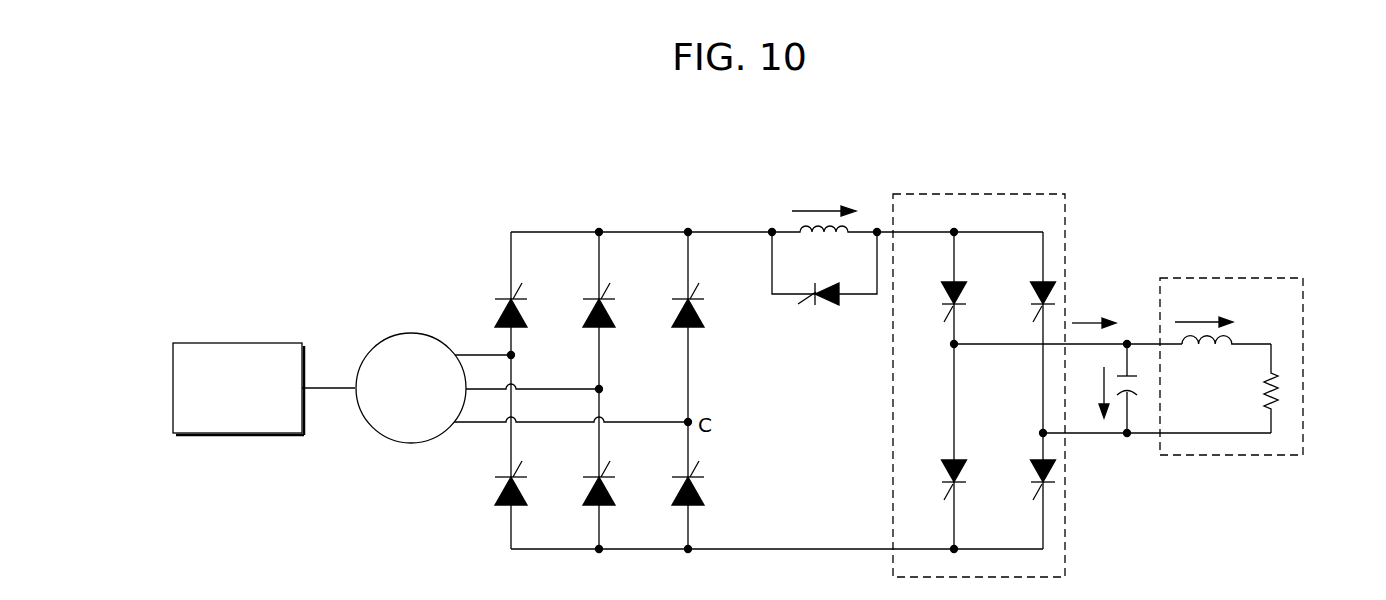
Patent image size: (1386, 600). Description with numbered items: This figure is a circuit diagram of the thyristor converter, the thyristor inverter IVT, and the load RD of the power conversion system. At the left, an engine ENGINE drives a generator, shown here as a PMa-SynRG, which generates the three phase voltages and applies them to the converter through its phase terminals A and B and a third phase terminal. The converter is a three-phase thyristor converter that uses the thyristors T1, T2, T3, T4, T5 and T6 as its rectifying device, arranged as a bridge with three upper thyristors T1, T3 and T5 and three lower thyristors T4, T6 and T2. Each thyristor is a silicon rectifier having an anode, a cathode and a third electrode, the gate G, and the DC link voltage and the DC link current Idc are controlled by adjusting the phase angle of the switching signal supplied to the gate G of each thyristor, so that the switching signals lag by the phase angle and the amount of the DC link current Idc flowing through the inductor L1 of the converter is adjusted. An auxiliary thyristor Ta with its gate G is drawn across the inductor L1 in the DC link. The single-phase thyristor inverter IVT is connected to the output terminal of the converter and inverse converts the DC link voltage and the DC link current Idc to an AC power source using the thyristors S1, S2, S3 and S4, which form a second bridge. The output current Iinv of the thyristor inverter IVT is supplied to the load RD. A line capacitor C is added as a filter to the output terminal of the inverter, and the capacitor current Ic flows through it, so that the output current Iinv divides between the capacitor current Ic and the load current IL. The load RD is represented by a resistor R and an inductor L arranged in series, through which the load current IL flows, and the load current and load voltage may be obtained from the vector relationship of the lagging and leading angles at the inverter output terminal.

The engine ENGINE is at (238, 389).
The permanent magnet assisted synchronous reluctance generator PMa-SynRG is at (411, 388).
The phase A terminal A is at (494, 357).
The phase B terminal B is at (544, 391).
The thyristor T1 is at (526, 306).
The thyristor T2 is at (703, 484).
The thyristor T3 is at (614, 306).
The thyristor T4 is at (526, 484).
The thyristor T5 is at (703, 306).
The thyristor T6 is at (614, 484).
The inductor L1 is at (824, 247).
The DC link current Idc is at (824, 201).
The auxiliary thyristor Ta is at (824, 282).
The gate G is at (795, 308).
The thyristor inverter IVT is at (993, 194).
The thyristor S1 is at (937, 300).
The thyristor S2 is at (937, 478).
The thyristor S3 is at (1027, 300).
The thyristor S4 is at (1027, 478).
The output current Iinv is at (1094, 311).
The line capacitor C is at (1135, 389).
The capacitor current Ic is at (1096, 392).
The load RD is at (1227, 278).
The load current IL is at (1204, 310).
The inductor L is at (1226, 358).
The resistor R is at (1280, 388).